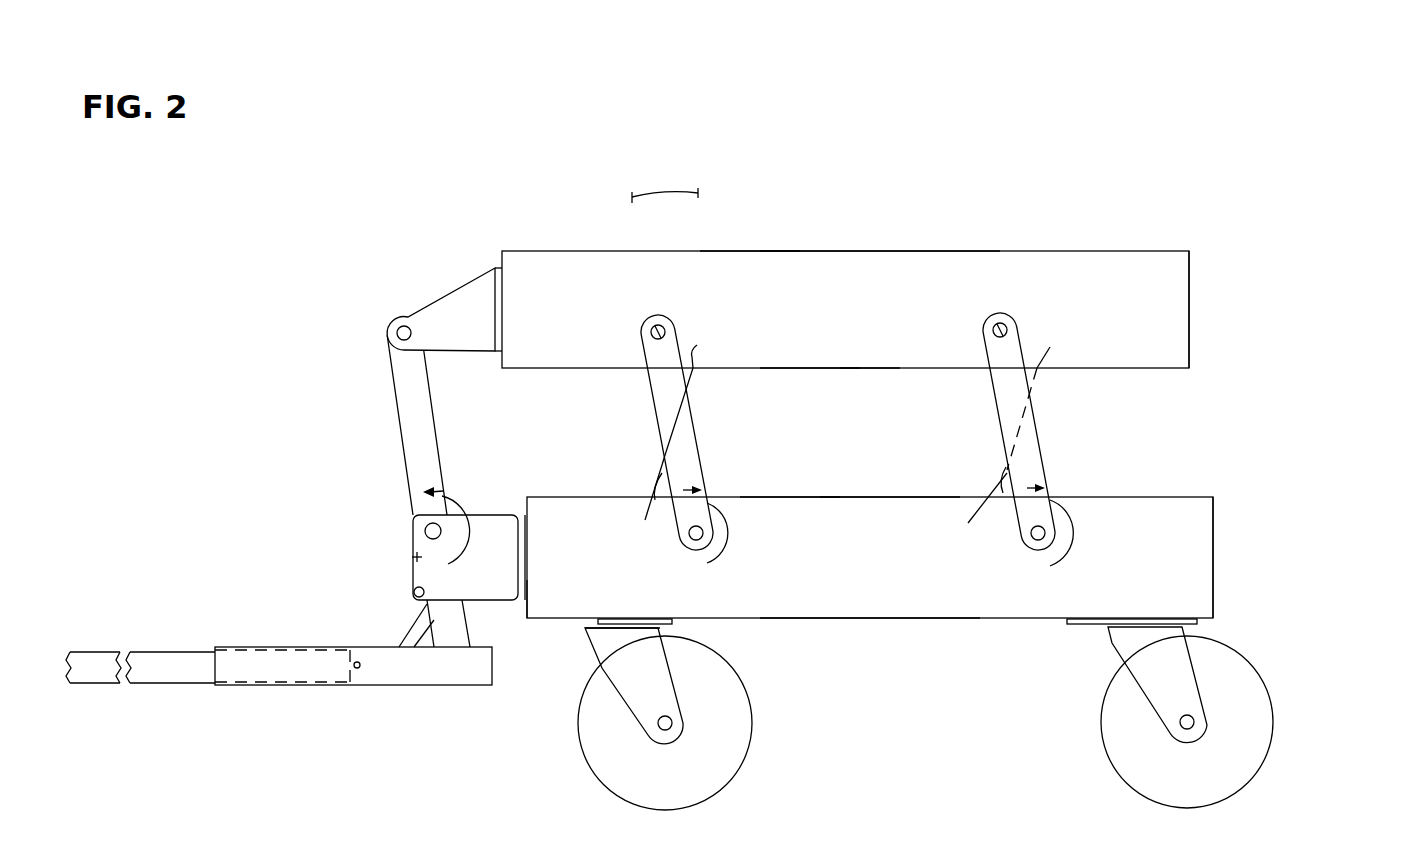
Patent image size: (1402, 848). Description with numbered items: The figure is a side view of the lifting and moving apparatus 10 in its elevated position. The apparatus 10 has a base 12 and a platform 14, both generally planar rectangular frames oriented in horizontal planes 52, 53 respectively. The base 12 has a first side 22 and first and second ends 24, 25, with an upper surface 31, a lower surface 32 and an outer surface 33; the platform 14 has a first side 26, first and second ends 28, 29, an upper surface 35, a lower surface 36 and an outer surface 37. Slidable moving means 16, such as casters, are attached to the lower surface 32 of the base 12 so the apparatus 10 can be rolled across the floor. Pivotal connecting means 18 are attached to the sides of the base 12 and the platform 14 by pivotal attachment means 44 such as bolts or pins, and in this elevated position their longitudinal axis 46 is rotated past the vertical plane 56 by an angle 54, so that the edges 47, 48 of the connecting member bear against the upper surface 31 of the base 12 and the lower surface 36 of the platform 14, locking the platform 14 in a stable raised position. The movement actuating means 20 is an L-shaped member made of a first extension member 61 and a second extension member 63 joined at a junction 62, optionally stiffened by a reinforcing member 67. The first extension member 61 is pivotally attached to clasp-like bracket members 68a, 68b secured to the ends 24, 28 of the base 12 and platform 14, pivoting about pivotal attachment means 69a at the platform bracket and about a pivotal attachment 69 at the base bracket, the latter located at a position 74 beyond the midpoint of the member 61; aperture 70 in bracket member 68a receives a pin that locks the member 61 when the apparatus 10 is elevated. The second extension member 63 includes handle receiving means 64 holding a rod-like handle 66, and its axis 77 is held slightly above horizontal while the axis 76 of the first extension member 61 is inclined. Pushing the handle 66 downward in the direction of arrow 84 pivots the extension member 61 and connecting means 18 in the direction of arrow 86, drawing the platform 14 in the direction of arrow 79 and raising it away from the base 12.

The apparatus 10 is at (1312, 190).
The base 12 is at (1175, 505).
The platform 14 is at (1127, 265).
The slidable moving means 16 is at (755, 710).
The pivotal connecting means 18 is at (652, 402).
The movement actuating means 20 is at (400, 688).
The first side of base 22 is at (866, 510).
The first end of base 24 is at (525, 604).
The second end of base 25 is at (1215, 515).
The first side of platform 26 is at (846, 262).
The first end of platform 28 is at (498, 262).
The second end of platform 29 is at (1192, 272).
The first upper surface of base 31 is at (800, 493).
The second lower surface of base 32 is at (905, 610).
The outer surface of base 33 is at (823, 602).
The upper surface of platform 35 is at (758, 250).
The second lower surface of platform 36 is at (820, 372).
The outer surface of platform 37 is at (873, 345).
The pivotal attachment means 44 is at (1005, 320).
The longitudinal axis of pivotal connecting means 46 is at (700, 530).
The edge of connecting member 47 is at (697, 345).
The edge of connecting member 48 is at (810, 503).
The horizontal plane of base 52 is at (1146, 558).
The horizontal plane of platform 53 is at (1150, 307).
The angle 54 is at (648, 194).
The vertical plane 56 is at (698, 530).
The first extension member 61 is at (395, 393).
The junction 62 is at (444, 688).
The second extension member 63 is at (370, 680).
The handle receiving means 64 is at (255, 688).
The handle 66 is at (172, 672).
The reinforcing member 67 is at (410, 632).
The bracket member 68a is at (445, 305).
The bracket member 68b is at (500, 515).
The lower pivot pin 69 is at (424, 525).
The pivotal attachment means 69a is at (400, 325).
The aperture 70 is at (413, 590).
The position 74 is at (408, 553).
The axis of extension member 76 is at (448, 518).
The axis of extension member 77 is at (440, 668).
The arrow 79 is at (828, 129).
The arrow 84 is at (90, 640).
The arrow 86 is at (730, 537).